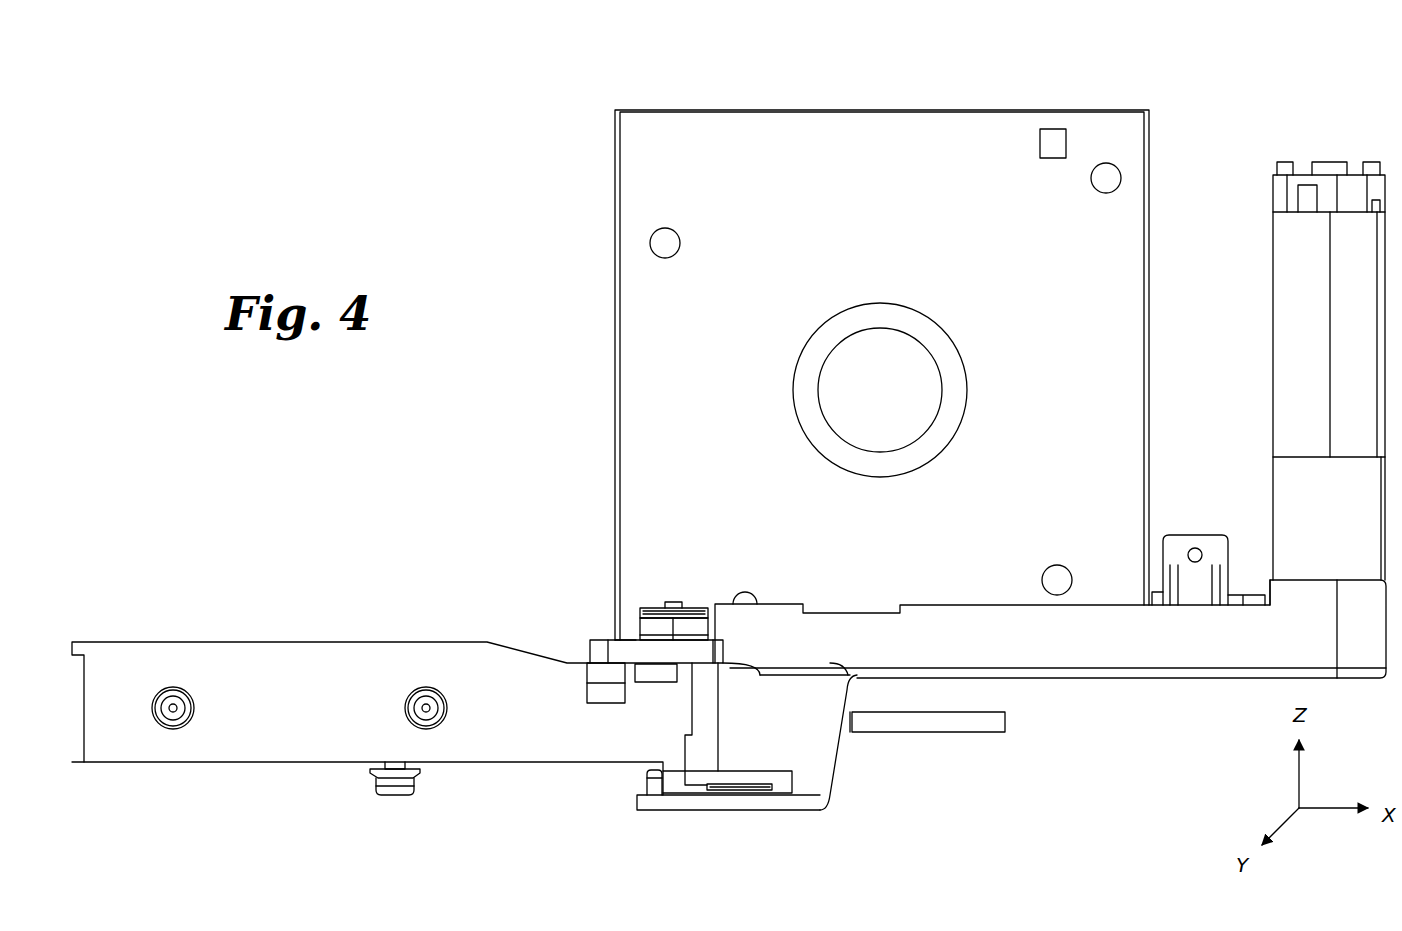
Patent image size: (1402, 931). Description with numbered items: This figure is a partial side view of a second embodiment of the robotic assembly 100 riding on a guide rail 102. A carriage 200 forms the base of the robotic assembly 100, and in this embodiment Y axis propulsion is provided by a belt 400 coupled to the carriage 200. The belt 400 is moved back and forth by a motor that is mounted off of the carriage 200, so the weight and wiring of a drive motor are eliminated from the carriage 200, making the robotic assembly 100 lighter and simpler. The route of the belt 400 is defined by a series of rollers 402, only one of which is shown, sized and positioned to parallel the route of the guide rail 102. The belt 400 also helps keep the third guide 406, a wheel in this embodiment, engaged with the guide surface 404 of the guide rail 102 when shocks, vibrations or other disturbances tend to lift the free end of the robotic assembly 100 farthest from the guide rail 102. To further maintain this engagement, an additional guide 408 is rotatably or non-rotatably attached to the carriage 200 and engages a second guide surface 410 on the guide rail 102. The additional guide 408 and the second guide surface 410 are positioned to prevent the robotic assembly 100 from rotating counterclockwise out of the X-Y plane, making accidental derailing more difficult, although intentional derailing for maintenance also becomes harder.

The robotic assembly 100 is at (950, 92).
The guide rail 102 is at (250, 753).
The carriage 200 is at (1115, 655).
The belt 400 is at (850, 735).
The rollers 402 is at (952, 735).
The guide surface 404 is at (660, 775).
The third guide 406 is at (713, 780).
The additional guide 408 is at (683, 780).
The second guide surface 410 is at (672, 763).